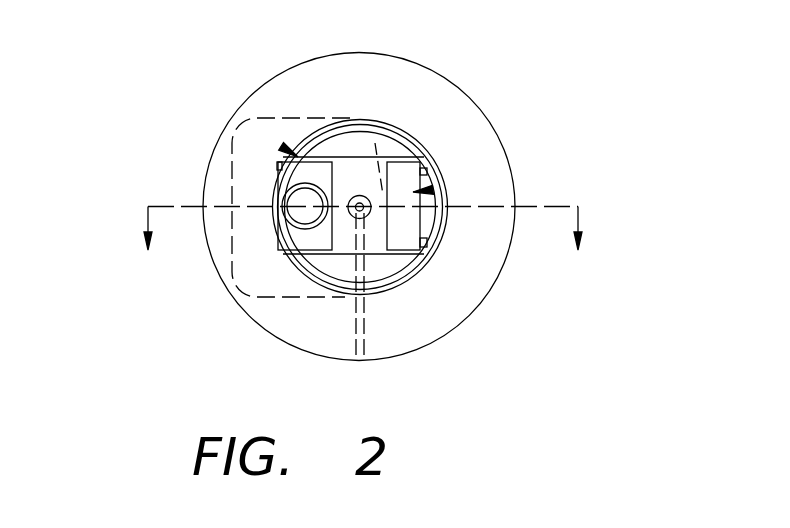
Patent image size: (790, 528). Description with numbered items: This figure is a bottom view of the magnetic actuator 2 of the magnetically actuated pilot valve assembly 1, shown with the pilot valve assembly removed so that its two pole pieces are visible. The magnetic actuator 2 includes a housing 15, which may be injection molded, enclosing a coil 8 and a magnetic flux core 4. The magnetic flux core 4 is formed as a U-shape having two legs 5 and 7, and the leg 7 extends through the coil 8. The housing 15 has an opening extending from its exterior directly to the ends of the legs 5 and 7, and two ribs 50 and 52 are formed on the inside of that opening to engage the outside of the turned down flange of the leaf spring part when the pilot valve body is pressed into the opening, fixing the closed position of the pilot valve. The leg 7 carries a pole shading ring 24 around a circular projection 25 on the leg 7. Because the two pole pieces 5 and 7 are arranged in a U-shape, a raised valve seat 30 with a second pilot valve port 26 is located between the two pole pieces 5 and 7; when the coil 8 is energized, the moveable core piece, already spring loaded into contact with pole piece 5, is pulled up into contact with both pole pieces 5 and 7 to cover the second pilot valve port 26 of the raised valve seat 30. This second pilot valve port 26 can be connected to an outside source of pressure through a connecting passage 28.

The magnetically actuated pilot valve assembly 1 is at (364, 229).
The magnetic actuator 2 is at (515, 242).
The magnetic flux core 4 is at (286, 149).
The leg 5 is at (418, 187).
The leg 7 is at (280, 166).
The coil 8 is at (240, 286).
The housing 15 is at (450, 120).
The pole shading ring 24 is at (295, 232).
The circular projection 25 is at (297, 200).
The second pilot valve port 26 is at (362, 210).
The connecting passage 28 is at (352, 319).
The raised valve seat 30 is at (360, 206).
The rib 50 is at (445, 158).
The rib 52 is at (420, 245).